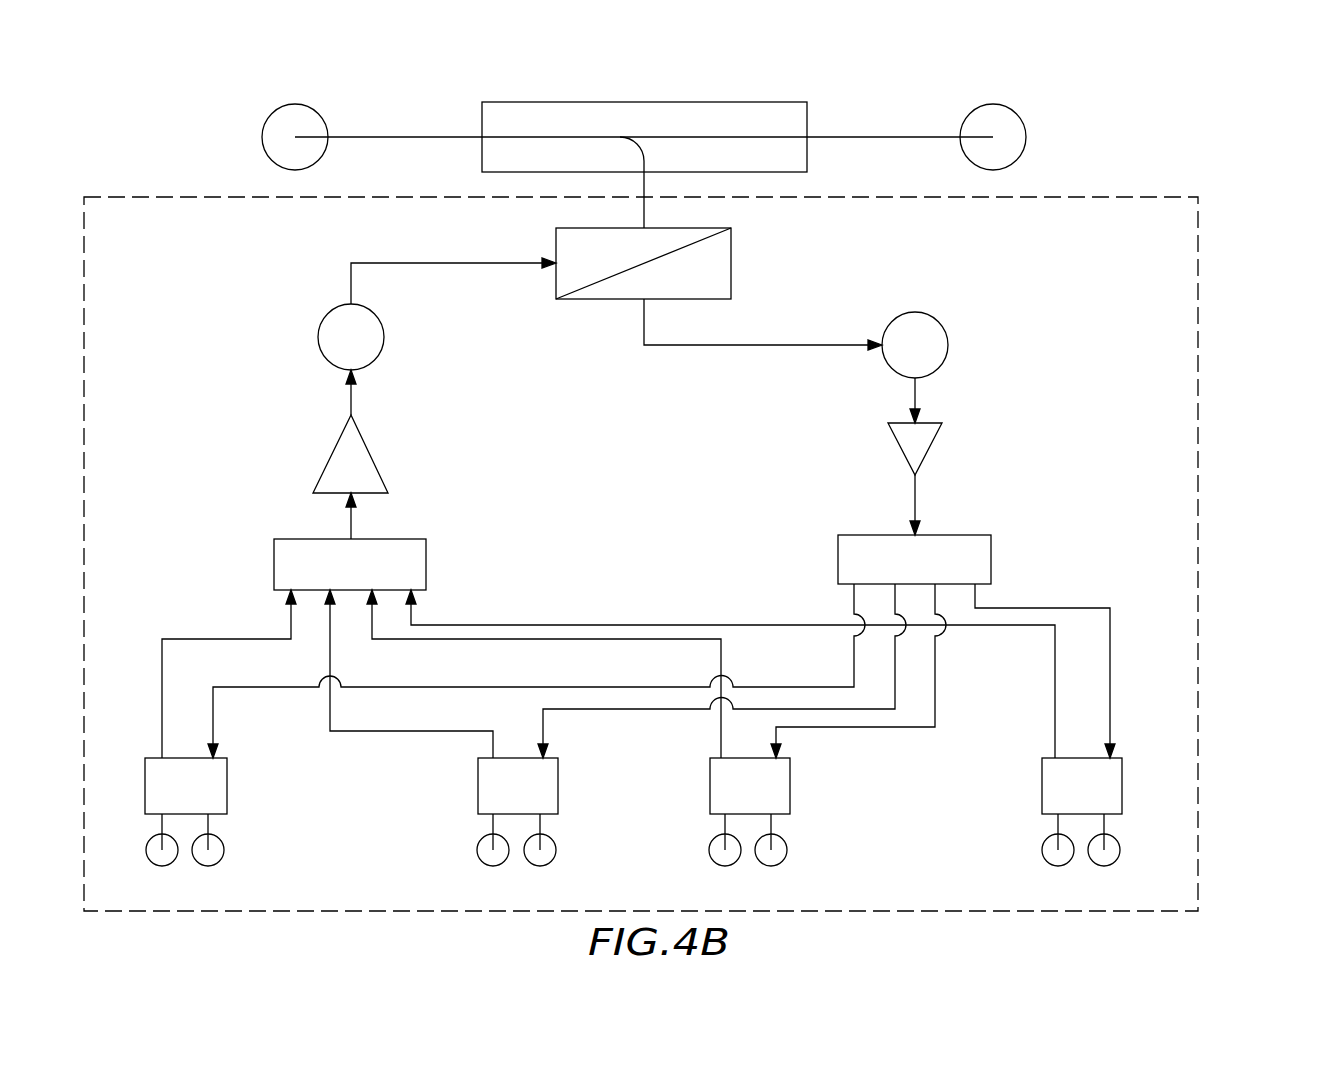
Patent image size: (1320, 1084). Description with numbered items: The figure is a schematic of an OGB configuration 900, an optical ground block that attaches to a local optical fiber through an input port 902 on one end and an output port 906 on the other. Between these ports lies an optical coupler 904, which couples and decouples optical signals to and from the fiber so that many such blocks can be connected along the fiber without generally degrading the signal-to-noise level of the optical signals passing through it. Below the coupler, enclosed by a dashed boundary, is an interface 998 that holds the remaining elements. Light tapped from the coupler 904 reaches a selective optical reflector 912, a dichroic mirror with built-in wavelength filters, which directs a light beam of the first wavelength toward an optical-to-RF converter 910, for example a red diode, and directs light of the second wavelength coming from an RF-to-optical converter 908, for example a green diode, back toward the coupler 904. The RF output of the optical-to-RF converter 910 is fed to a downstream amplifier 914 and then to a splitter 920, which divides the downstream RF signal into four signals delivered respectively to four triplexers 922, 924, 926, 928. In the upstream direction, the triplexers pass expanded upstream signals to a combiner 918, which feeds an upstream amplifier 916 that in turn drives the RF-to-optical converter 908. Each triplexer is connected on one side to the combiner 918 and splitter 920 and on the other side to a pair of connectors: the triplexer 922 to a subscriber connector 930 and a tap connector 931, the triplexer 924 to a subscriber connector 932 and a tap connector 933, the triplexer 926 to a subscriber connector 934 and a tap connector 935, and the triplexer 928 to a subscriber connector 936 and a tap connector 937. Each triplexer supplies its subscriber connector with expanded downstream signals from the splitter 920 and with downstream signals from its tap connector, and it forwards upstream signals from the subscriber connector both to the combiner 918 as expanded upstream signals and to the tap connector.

The OGB configuration 900 is at (1240, 741).
The input port 902 is at (296, 104).
The optical coupler 904 is at (643, 103).
The output port 906 is at (997, 105).
The RF-to-optical converter 908 is at (323, 313).
The optical-to-RF converter 910 is at (940, 322).
The selective optical reflector 912 is at (698, 228).
The downstream amplifier 914 is at (928, 450).
The upstream amplifier 916 is at (370, 450).
The combiner 918 is at (393, 539).
The splitter 920 is at (963, 535).
The triplexer 922 is at (145, 793).
The triplexer 924 is at (478, 793).
The triplexer 926 is at (710, 793).
The triplexer 928 is at (1042, 793).
The subscriber connector 930 is at (162, 866).
The tap connector 931 is at (208, 866).
The subscriber connector 932 is at (493, 866).
The tap connector 933 is at (540, 866).
The subscriber connector 934 is at (725, 866).
The tap connector 935 is at (771, 866).
The subscriber connector 936 is at (1058, 866).
The tap connector 937 is at (1104, 866).
The interface 998 is at (1198, 317).